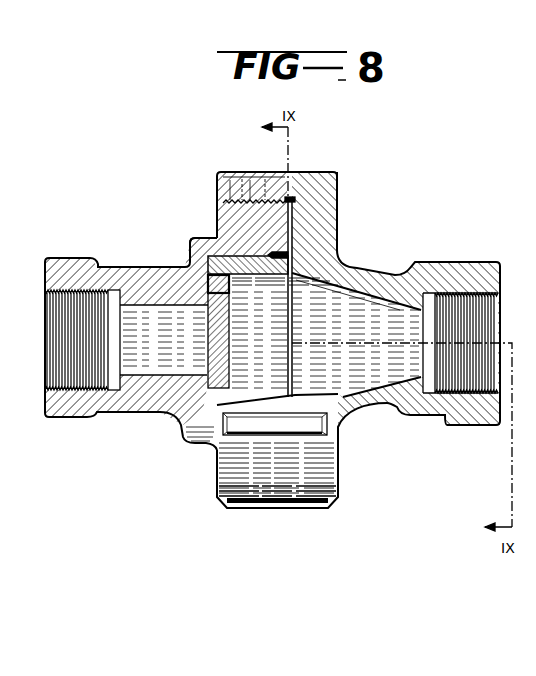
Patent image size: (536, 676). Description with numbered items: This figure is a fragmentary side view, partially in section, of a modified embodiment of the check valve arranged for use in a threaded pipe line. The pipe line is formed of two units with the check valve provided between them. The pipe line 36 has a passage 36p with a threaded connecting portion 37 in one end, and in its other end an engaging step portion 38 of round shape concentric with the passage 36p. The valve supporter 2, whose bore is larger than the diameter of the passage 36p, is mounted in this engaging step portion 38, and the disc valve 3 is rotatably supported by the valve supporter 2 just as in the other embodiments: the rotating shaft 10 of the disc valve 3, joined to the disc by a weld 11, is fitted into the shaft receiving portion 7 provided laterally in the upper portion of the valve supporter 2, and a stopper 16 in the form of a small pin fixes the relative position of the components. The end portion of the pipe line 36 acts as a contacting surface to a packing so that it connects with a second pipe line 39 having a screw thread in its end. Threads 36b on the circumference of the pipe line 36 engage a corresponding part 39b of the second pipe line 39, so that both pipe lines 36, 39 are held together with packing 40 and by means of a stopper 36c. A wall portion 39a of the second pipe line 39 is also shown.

The valve supporter 2 is at (223, 260).
The disc valve 3 is at (222, 355).
The shaft receiving portion 7 is at (192, 258).
The rotating shaft 10 is at (232, 295).
The weld 11 is at (190, 273).
The stopper 16 is at (293, 253).
The pipe line 36 is at (117, 407).
The passage 36p is at (133, 377).
The threads 36b is at (220, 210).
The stopper 36c is at (268, 172).
The threaded connecting portion 37 is at (466, 298).
The engaging step portion 38 is at (190, 425).
The second pipe line 39 is at (363, 407).
The body wall 39a is at (402, 377).
The corresponding part 39b is at (228, 200).
The packing 40 is at (291, 230).